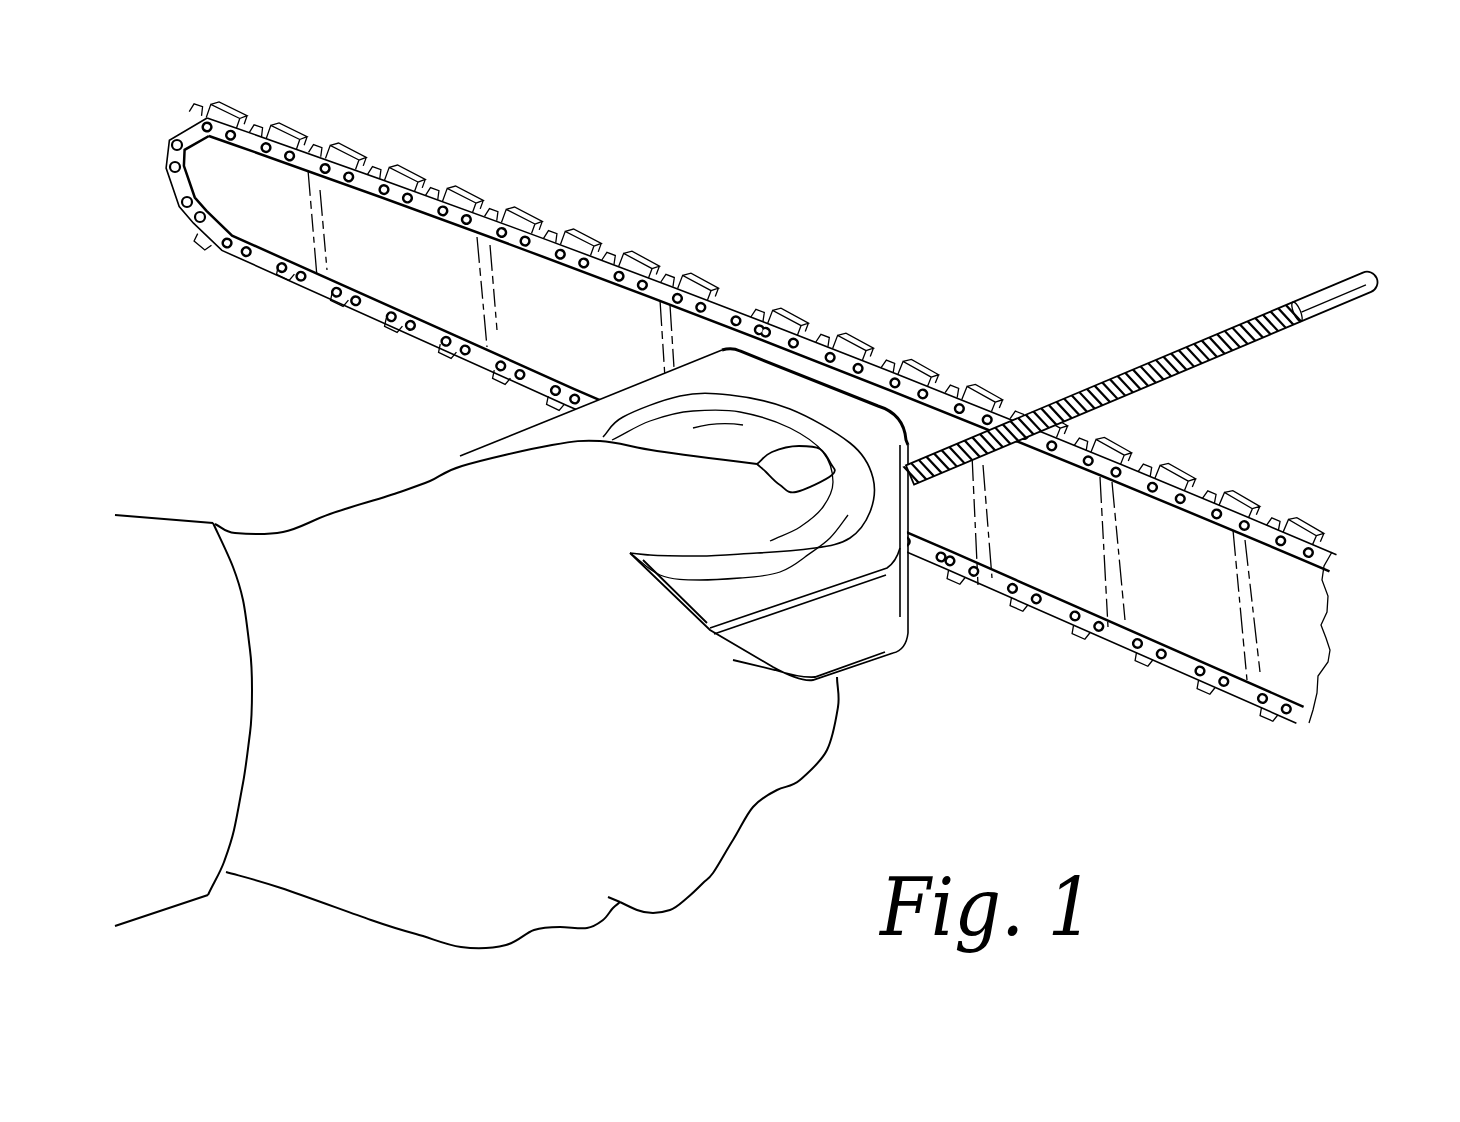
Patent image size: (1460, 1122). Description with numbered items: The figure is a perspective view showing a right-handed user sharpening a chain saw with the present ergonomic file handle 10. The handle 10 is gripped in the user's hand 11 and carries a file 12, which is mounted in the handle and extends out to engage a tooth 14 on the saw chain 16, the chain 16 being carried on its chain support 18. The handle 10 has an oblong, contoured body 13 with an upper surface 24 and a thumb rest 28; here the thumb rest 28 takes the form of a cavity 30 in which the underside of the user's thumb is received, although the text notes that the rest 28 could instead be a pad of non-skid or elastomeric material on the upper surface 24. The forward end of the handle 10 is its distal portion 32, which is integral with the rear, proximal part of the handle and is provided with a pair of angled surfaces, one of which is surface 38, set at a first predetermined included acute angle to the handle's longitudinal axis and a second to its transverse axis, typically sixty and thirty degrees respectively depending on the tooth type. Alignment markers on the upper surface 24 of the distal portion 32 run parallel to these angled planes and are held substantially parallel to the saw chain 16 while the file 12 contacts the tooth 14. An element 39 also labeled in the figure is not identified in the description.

The ergonomic file handle 10 is at (479, 403).
The user's hand 11 is at (477, 694).
The file 12 is at (1143, 366).
The body 13 is at (773, 665).
The tooth 14 is at (1137, 429).
The saw chain 16 is at (751, 449).
The chain support 18 is at (822, 429).
The upper surface 24 is at (882, 579).
The thumb rest 28 is at (803, 569).
The cavity 30 is at (695, 429).
The distal portion 32 is at (873, 354).
The angled surface 38 is at (809, 303).
The chain direction indicia 39 is at (977, 531).